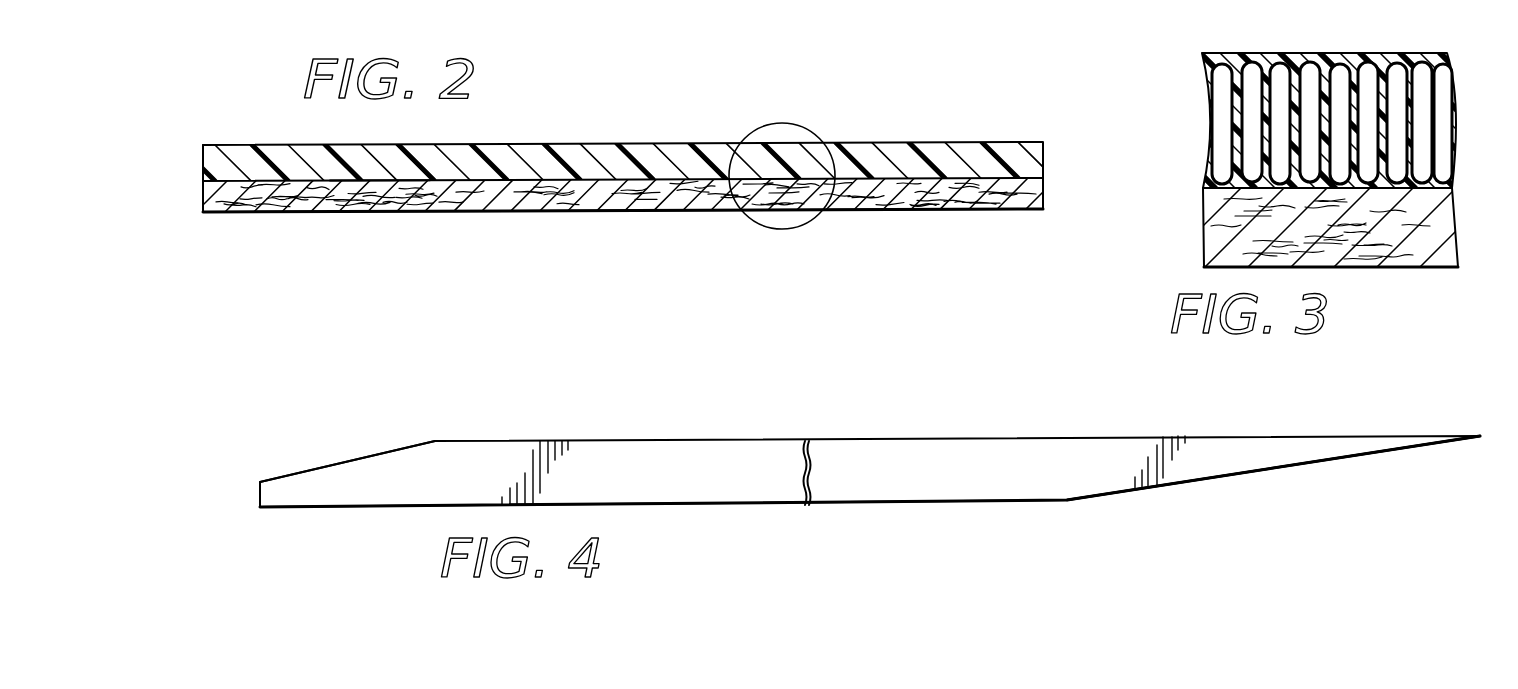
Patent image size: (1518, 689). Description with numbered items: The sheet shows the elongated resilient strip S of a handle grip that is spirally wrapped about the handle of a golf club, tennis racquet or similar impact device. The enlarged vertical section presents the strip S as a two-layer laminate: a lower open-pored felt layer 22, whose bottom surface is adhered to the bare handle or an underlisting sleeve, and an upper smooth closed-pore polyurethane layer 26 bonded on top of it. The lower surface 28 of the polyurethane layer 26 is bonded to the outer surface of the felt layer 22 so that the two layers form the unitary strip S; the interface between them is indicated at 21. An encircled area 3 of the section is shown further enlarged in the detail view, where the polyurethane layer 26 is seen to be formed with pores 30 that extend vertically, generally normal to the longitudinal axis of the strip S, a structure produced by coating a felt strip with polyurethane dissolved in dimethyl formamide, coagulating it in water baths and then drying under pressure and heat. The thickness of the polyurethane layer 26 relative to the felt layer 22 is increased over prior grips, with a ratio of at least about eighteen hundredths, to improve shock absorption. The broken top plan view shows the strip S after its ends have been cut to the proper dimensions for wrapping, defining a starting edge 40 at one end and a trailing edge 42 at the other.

In FIG. 2, the elongated resilient strip S is at (912, 138).
In FIG. 3, the elongated resilient strip S is at (1192, 207).
In FIG. 4, the elongated resilient strip S is at (950, 432).
In FIG. 2, the adhesive/interface layer 21 is at (385, 183).
In FIG. 2, the open-pored felt layer 22 is at (478, 200).
In FIG. 3, the open-pored felt layer 22 is at (1222, 236).
In FIG. 2, the polyurethane layer 26 is at (569, 145).
In FIG. 3, the polyurethane layer 26 is at (1281, 52).
In FIG. 2, the lower surface of the polyurethane layer 28 is at (233, 186).
In FIG. 3, the pores 30 is at (1248, 111).
In FIG. 2, the encircled area 3 is at (816, 227).
In FIG. 4, the starting edge 40 is at (374, 468).
In FIG. 4, the trailing edge 42 is at (1267, 457).